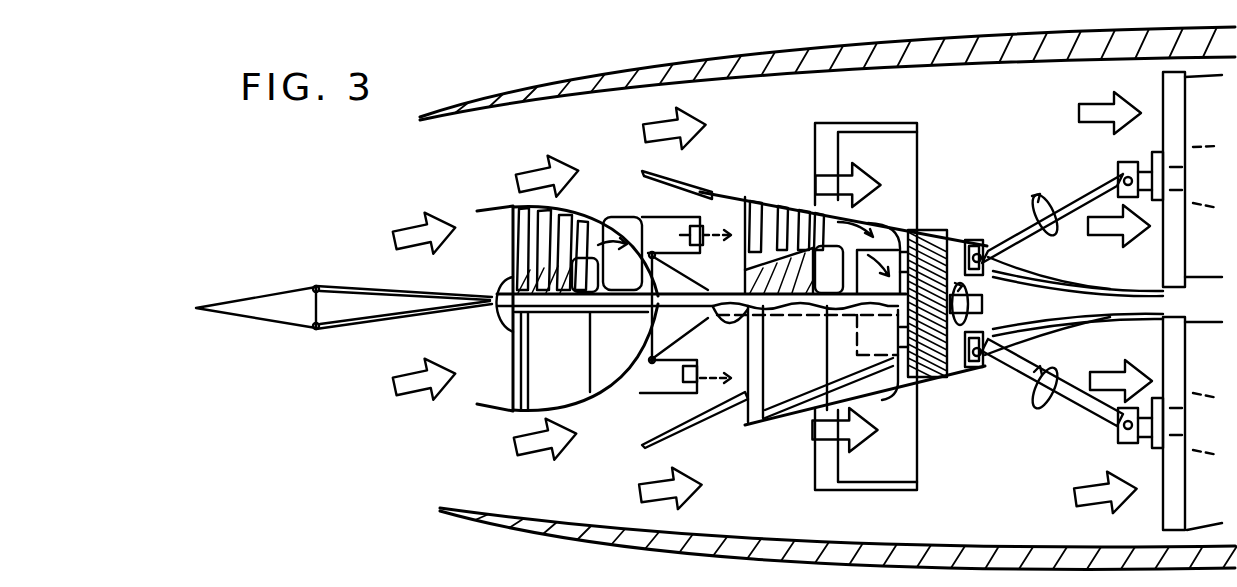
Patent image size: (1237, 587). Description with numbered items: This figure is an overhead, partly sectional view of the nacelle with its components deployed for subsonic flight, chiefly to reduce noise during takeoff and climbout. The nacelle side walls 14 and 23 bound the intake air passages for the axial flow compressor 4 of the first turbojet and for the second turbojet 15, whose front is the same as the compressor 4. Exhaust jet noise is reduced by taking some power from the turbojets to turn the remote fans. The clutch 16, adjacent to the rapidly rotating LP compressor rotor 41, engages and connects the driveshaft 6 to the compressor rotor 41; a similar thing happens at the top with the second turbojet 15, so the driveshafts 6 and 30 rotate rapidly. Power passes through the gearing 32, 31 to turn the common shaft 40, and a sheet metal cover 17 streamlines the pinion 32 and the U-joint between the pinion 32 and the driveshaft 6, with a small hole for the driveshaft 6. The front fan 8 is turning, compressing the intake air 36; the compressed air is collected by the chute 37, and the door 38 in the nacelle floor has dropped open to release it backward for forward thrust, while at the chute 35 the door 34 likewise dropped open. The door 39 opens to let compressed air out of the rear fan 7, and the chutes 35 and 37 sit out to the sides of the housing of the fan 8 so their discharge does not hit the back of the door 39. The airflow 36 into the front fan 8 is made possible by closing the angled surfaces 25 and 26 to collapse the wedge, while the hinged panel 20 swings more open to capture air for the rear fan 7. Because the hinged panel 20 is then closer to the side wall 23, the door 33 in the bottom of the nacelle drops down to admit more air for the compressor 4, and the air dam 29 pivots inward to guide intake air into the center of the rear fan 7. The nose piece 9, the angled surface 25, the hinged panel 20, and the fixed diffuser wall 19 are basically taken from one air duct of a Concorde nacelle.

The axial flow compressor 4 is at (1202, 500).
The driveshaft 6 is at (1083, 403).
The rear fan 7 is at (760, 195).
The front fan 8 is at (513, 272).
The nose piece 9 is at (272, 322).
The nacelle side wall 14 is at (628, 72).
The second turbojet 15 is at (1203, 249).
The clutch 16 is at (1153, 453).
The sheet metal cover 17 is at (964, 378).
The fixed diffuser wall 19 is at (1077, 323).
The hinged panel 20 is at (677, 437).
The nacelle side wall 23 is at (608, 543).
The angled surface 25 is at (370, 330).
The angled surface 26 is at (398, 291).
The air dam 29 is at (684, 272).
The driveshaft 30 is at (1073, 210).
The gearing 31 is at (957, 240).
The pinion 32 is at (923, 378).
The door 33 is at (878, 470).
The door 34 is at (692, 368).
The chute 35 is at (613, 398).
The intake air 36 is at (413, 230).
The chute 37 is at (618, 218).
The door 38 is at (692, 227).
The door 39 is at (873, 278).
The common shaft 40 is at (983, 305).
The LP compressor rotor 41 is at (1213, 391).